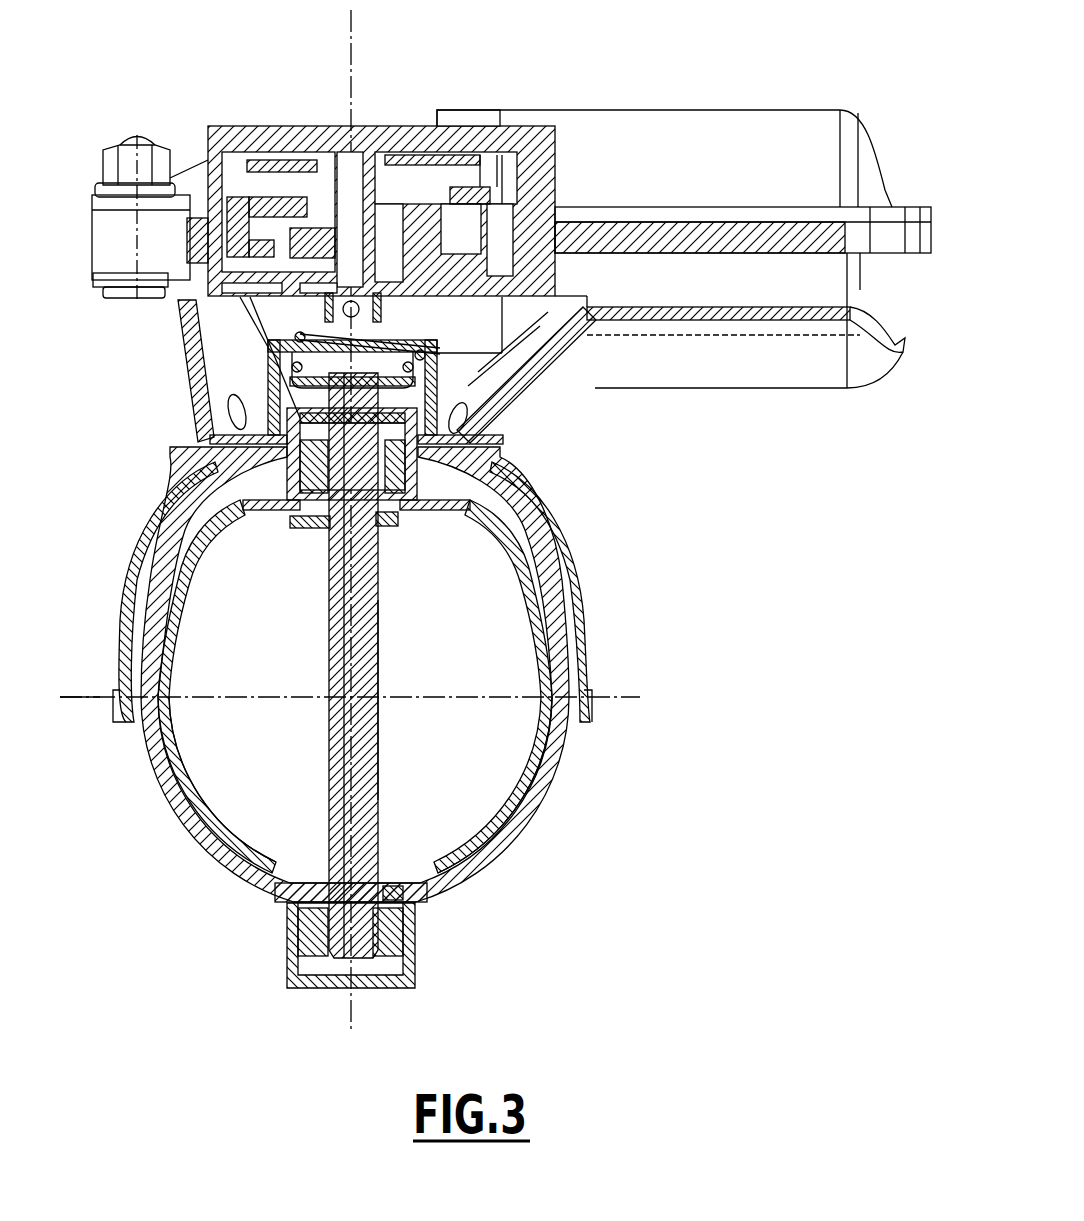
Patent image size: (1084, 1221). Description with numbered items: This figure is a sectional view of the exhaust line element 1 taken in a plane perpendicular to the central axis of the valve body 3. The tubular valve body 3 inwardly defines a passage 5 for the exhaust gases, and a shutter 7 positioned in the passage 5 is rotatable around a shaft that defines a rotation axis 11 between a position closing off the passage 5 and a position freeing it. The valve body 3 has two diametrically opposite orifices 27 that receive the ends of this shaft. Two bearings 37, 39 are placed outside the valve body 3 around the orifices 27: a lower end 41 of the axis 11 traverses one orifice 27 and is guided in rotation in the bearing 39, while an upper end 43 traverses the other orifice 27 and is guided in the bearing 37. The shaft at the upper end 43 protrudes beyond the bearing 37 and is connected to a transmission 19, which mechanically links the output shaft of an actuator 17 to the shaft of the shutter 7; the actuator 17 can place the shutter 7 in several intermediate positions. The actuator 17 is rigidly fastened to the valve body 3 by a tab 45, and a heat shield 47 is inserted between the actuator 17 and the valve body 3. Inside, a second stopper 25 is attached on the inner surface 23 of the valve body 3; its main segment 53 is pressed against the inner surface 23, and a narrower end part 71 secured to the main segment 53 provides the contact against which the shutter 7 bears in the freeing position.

The exhaust line element 1 is at (185, 112).
The valve body 3 is at (542, 778).
The passage 5 is at (507, 827).
The shutter 7 is at (385, 714).
The rotation axis 11 is at (362, 666).
The actuator 17 is at (647, 130).
The transmission 19 is at (413, 315).
The inner surface 23 is at (540, 775).
The second stopper 25 is at (188, 768).
The orifices 27 is at (385, 525).
The bearing 37 is at (483, 450).
The bearing 39 is at (400, 935).
The lower end 41 is at (325, 937).
The upper end 43 is at (436, 367).
The tab 45 is at (878, 372).
The heat shield 47 is at (550, 533).
The main segment 53 is at (215, 828).
The narrower end part 71 is at (308, 520).